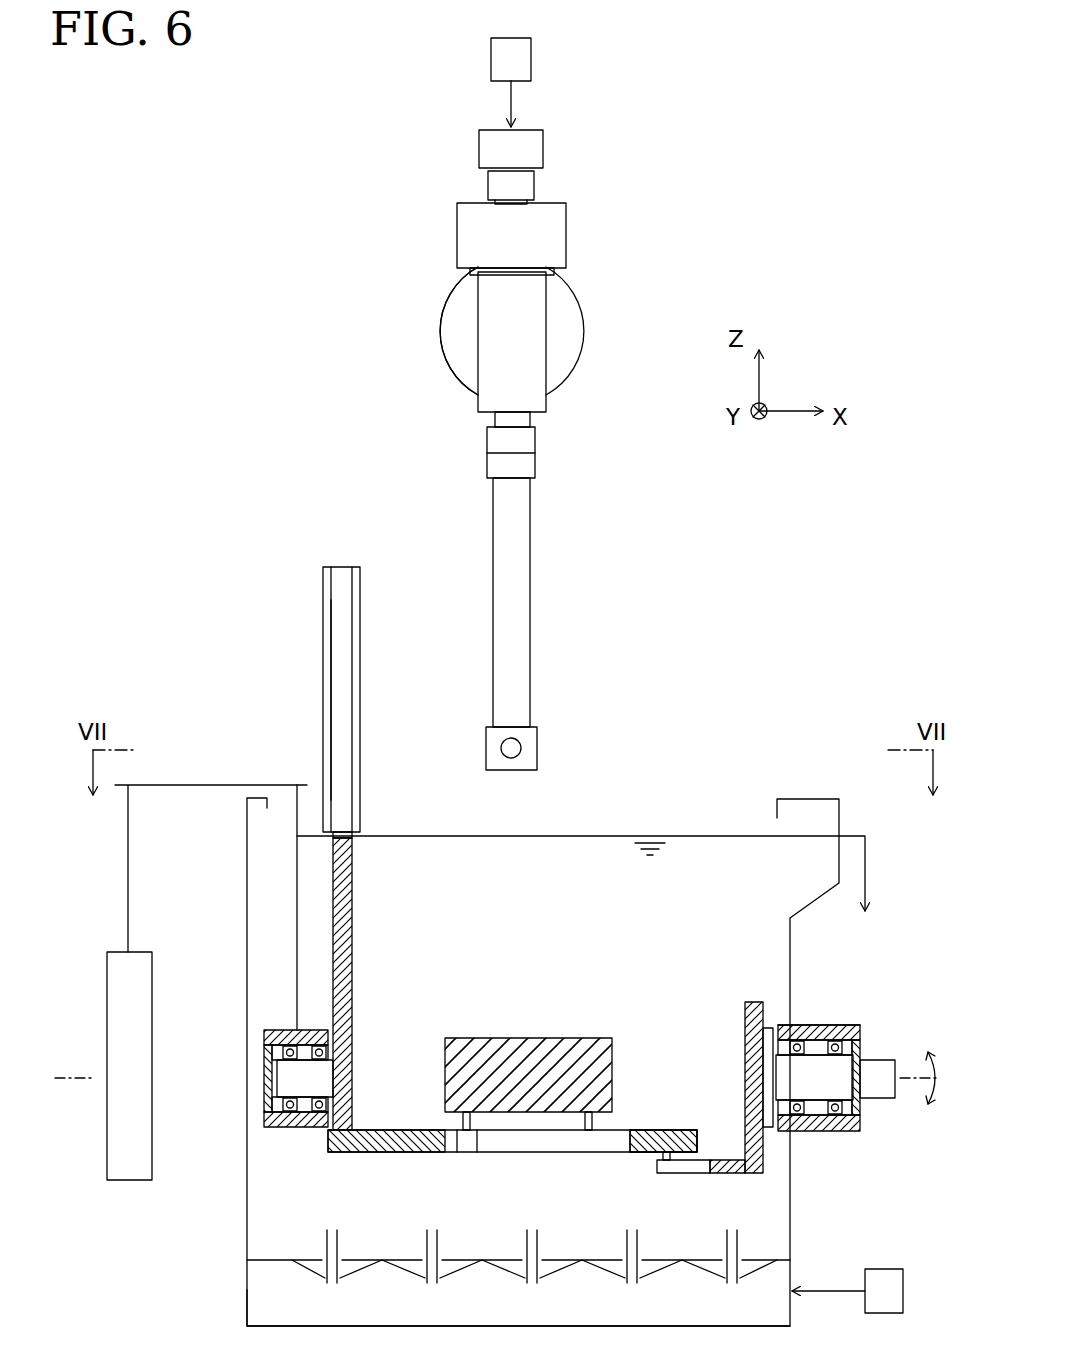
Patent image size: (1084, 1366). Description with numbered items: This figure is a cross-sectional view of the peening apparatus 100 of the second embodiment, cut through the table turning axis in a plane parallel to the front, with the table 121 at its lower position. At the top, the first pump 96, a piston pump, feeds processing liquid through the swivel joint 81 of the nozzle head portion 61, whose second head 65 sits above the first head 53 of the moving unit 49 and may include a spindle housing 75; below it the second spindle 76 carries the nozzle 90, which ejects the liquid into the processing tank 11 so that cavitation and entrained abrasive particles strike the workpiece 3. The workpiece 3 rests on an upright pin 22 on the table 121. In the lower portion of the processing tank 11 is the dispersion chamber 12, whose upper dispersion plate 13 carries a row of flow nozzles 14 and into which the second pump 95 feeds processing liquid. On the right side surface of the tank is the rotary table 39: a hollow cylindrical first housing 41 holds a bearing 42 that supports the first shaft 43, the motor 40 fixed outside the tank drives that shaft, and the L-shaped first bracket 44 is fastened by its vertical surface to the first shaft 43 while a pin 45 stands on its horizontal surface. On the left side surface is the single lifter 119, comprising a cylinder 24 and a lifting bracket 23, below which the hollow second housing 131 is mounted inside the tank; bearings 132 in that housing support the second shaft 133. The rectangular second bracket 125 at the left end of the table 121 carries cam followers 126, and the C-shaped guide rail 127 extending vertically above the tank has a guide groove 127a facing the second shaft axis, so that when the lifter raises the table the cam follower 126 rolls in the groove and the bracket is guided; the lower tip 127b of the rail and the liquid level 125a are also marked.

The peening apparatus 100 is at (885, 25).
The first pump 96 is at (531, 62).
The swivel joint 81 is at (479, 150).
The second head 65 is at (457, 238).
The moving unit 49 is at (600, 302).
The spindle housing 75 is at (478, 328).
The first head 53 is at (460, 383).
The second spindle 76 is at (535, 432).
The nozzle head portion 61 is at (467, 495).
The nozzle 90 is at (520, 745).
The guide rail 127 is at (360, 645).
The guide groove 127a is at (345, 686).
The tip portion 127b is at (360, 838).
The lifter 119 is at (232, 685).
The lifting bracket 23 is at (195, 785).
The cylinder 24 is at (107, 1020).
The processing tank 11 is at (247, 843).
The liquid surface 125a is at (333, 830).
The second bracket 125 is at (352, 893).
The cam follower 126 is at (352, 1015).
The second housing 131 is at (272, 1030).
The bearing 132 is at (277, 1100).
The second shaft 133 is at (277, 1078).
The workpiece 3 is at (558, 1038).
The pin 22 is at (588, 1125).
The table 121 is at (650, 1130).
The pin 45 is at (663, 1158).
The first bracket 44 is at (745, 1035).
The first shaft 43 is at (768, 1028).
The bearing 42 is at (835, 1027).
The first housing 41 is at (853, 1027).
The motor 40 is at (880, 1098).
The rotary table 39 is at (924, 985).
The heater plate 13 is at (275, 1260).
The flow nozzle 14 is at (425, 1228).
The dispersion chamber 12 is at (247, 1280).
The second pump 95 is at (872, 1269).